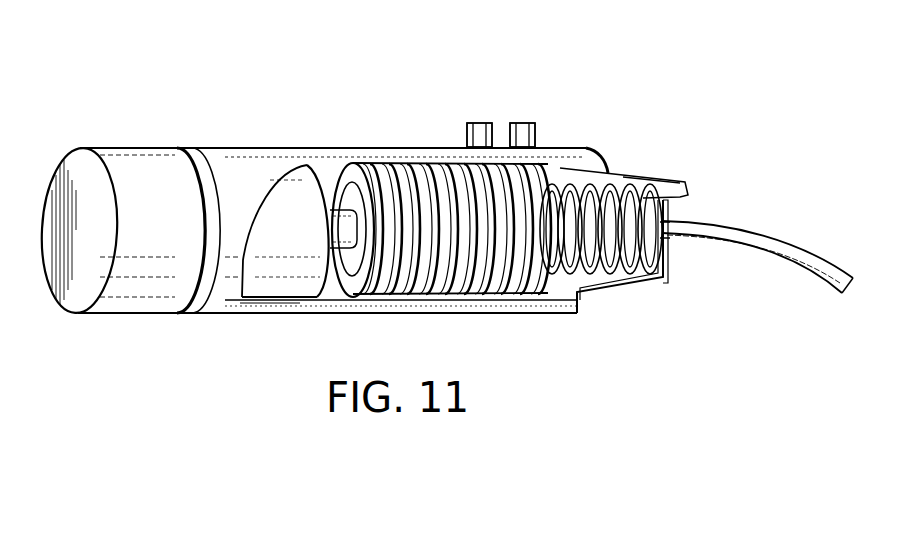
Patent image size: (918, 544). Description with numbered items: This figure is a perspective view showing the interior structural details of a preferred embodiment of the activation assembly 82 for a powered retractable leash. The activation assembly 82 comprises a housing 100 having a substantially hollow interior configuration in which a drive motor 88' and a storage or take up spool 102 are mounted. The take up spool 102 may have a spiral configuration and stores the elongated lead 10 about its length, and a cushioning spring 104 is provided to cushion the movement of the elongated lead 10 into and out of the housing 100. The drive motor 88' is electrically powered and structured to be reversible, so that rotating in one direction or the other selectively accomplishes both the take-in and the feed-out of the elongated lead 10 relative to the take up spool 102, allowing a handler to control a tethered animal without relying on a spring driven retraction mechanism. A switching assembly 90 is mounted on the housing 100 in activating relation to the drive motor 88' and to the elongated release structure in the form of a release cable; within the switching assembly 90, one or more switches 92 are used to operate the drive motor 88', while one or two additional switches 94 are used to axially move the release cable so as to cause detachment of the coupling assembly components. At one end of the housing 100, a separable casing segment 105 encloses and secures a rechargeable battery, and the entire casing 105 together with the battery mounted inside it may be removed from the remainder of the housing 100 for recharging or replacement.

The elongated lead 10 is at (767, 240).
The activation assembly 82 is at (180, 332).
The drive motor 88' is at (279, 275).
The switching assembly 90 is at (502, 93).
The switch 92 is at (475, 122).
The switch 94 is at (525, 122).
The housing 100 is at (248, 162).
The take up spool 102 is at (488, 321).
The cushioning spring 104 is at (592, 285).
The separable casing segment 105 is at (128, 148).